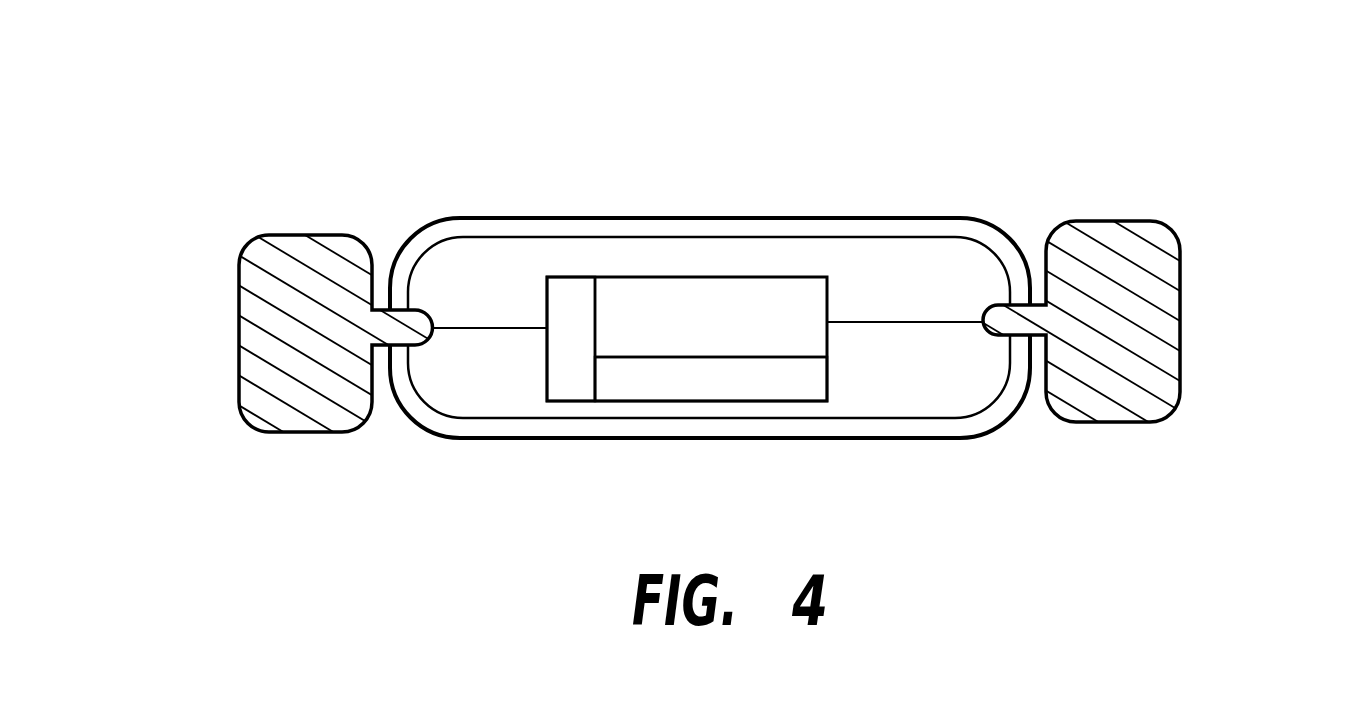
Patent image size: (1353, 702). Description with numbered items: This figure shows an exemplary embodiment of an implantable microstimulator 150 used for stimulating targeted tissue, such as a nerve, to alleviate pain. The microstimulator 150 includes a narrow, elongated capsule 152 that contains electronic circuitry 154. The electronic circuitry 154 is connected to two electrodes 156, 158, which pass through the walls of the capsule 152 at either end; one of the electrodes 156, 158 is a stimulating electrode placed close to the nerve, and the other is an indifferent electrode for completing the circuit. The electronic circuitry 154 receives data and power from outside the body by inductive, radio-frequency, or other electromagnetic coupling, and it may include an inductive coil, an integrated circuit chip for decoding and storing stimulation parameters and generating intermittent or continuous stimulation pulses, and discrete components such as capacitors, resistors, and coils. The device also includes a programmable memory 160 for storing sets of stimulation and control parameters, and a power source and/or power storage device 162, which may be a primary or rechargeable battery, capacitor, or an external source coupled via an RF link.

The microstimulator 150 is at (185, 205).
The capsule 152 is at (940, 422).
The electronic circuitry 154 is at (797, 277).
The electrode 156 is at (240, 313).
The electrode 158 is at (1180, 314).
The programmable memory 160 is at (547, 358).
The power source and/or power storage device 162 is at (827, 378).